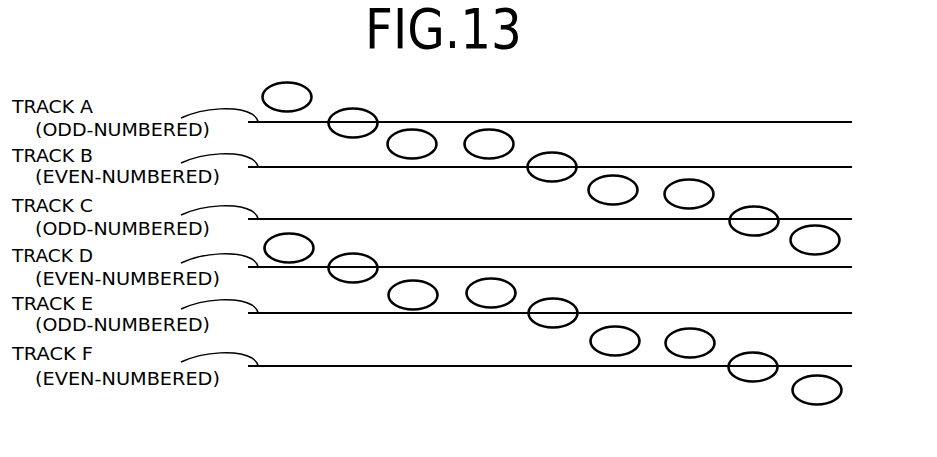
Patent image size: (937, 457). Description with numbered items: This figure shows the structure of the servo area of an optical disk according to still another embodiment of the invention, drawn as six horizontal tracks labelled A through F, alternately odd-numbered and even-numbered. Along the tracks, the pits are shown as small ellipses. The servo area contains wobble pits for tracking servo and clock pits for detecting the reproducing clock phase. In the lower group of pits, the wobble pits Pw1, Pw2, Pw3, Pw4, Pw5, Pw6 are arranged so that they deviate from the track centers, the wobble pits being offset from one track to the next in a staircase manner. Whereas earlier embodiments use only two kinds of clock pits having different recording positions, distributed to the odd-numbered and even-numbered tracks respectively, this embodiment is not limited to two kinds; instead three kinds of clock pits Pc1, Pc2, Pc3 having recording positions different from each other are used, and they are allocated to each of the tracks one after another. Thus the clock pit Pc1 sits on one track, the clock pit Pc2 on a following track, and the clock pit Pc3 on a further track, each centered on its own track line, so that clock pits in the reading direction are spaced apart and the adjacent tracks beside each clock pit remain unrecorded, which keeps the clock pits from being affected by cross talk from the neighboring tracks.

The wobble pit Pw1 is at (283, 263).
The wobble pit Pw2 is at (402, 309).
The wobble pit Pw3 is at (482, 307).
The wobble pit Pw4 is at (603, 355).
The wobble pit Pw5 is at (682, 357).
The wobble pit Pw6 is at (807, 404).
The clock pit Pc1 is at (377, 261).
The clock pit Pc2 is at (553, 328).
The clock pit Pc3 is at (742, 380).